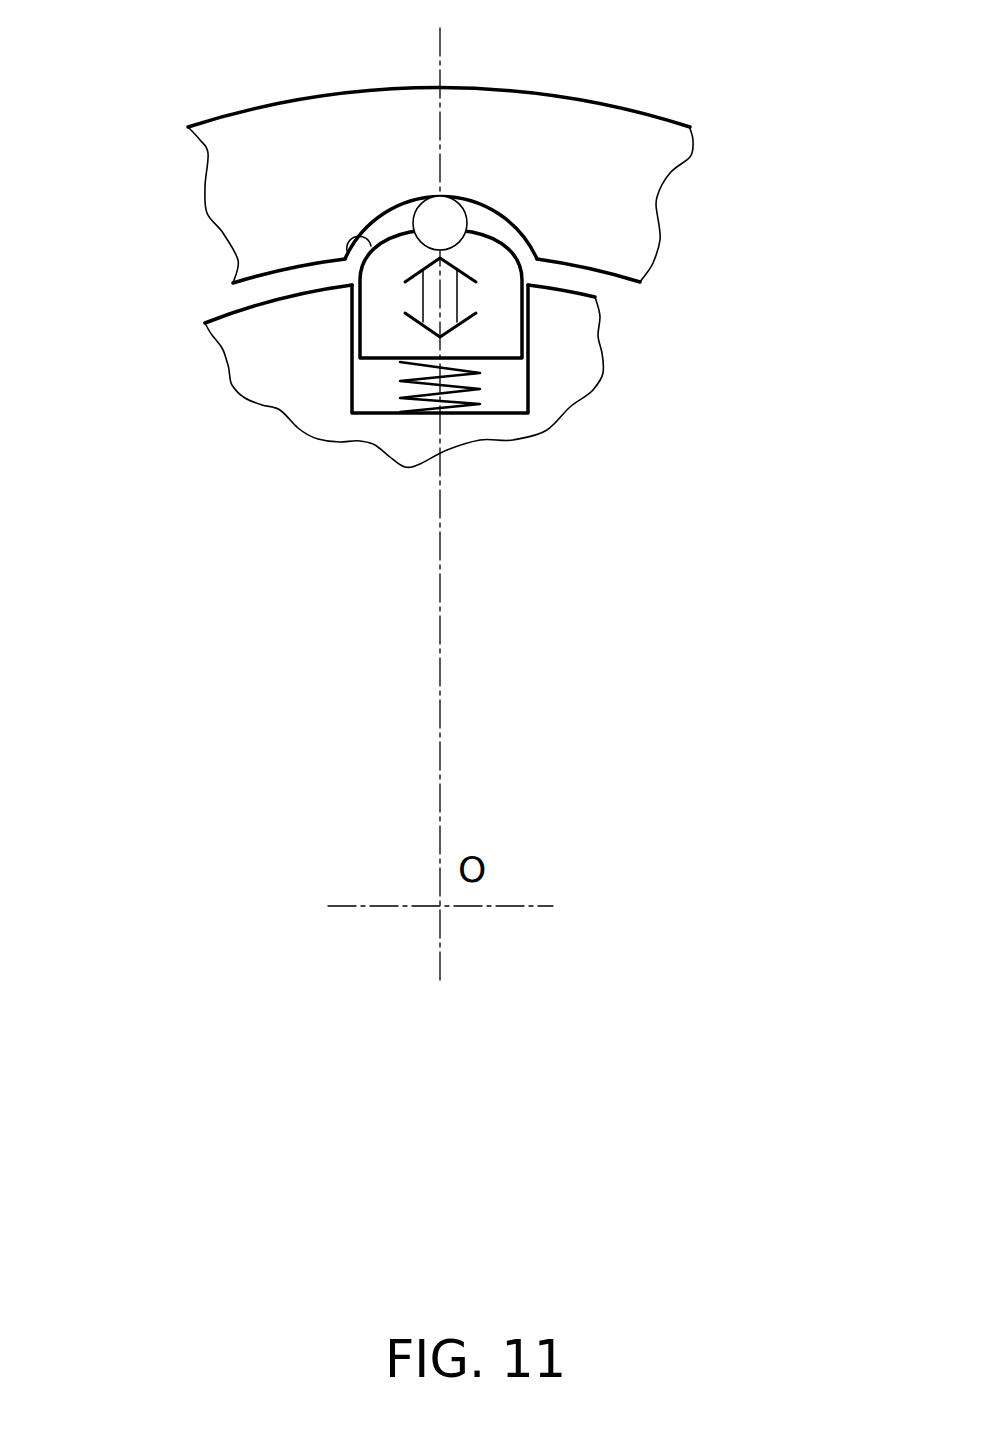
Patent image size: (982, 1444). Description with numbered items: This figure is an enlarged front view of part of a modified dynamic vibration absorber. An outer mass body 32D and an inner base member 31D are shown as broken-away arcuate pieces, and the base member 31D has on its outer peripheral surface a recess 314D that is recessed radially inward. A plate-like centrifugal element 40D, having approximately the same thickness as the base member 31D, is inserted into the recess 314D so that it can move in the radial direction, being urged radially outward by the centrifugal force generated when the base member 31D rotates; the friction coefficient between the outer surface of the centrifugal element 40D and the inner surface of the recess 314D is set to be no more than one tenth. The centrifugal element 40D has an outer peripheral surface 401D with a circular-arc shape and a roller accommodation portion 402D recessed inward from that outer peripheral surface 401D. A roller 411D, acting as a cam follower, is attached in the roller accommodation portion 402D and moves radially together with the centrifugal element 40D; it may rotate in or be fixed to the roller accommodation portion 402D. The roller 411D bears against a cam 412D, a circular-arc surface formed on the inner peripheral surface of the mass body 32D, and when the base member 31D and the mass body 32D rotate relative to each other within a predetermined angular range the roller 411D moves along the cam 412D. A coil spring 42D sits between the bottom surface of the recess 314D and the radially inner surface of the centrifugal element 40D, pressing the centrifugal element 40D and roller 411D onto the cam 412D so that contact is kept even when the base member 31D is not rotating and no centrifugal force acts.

The mass body 32D is at (667, 155).
The base member 31D is at (275, 377).
The recess 314D is at (380, 395).
The centrifugal element 40D is at (500, 315).
The outer peripheral surface 401D is at (503, 247).
The roller accommodation portion 402D is at (462, 237).
The roller 411D is at (427, 218).
The cam 412D is at (353, 250).
The coil spring 42D is at (470, 388).